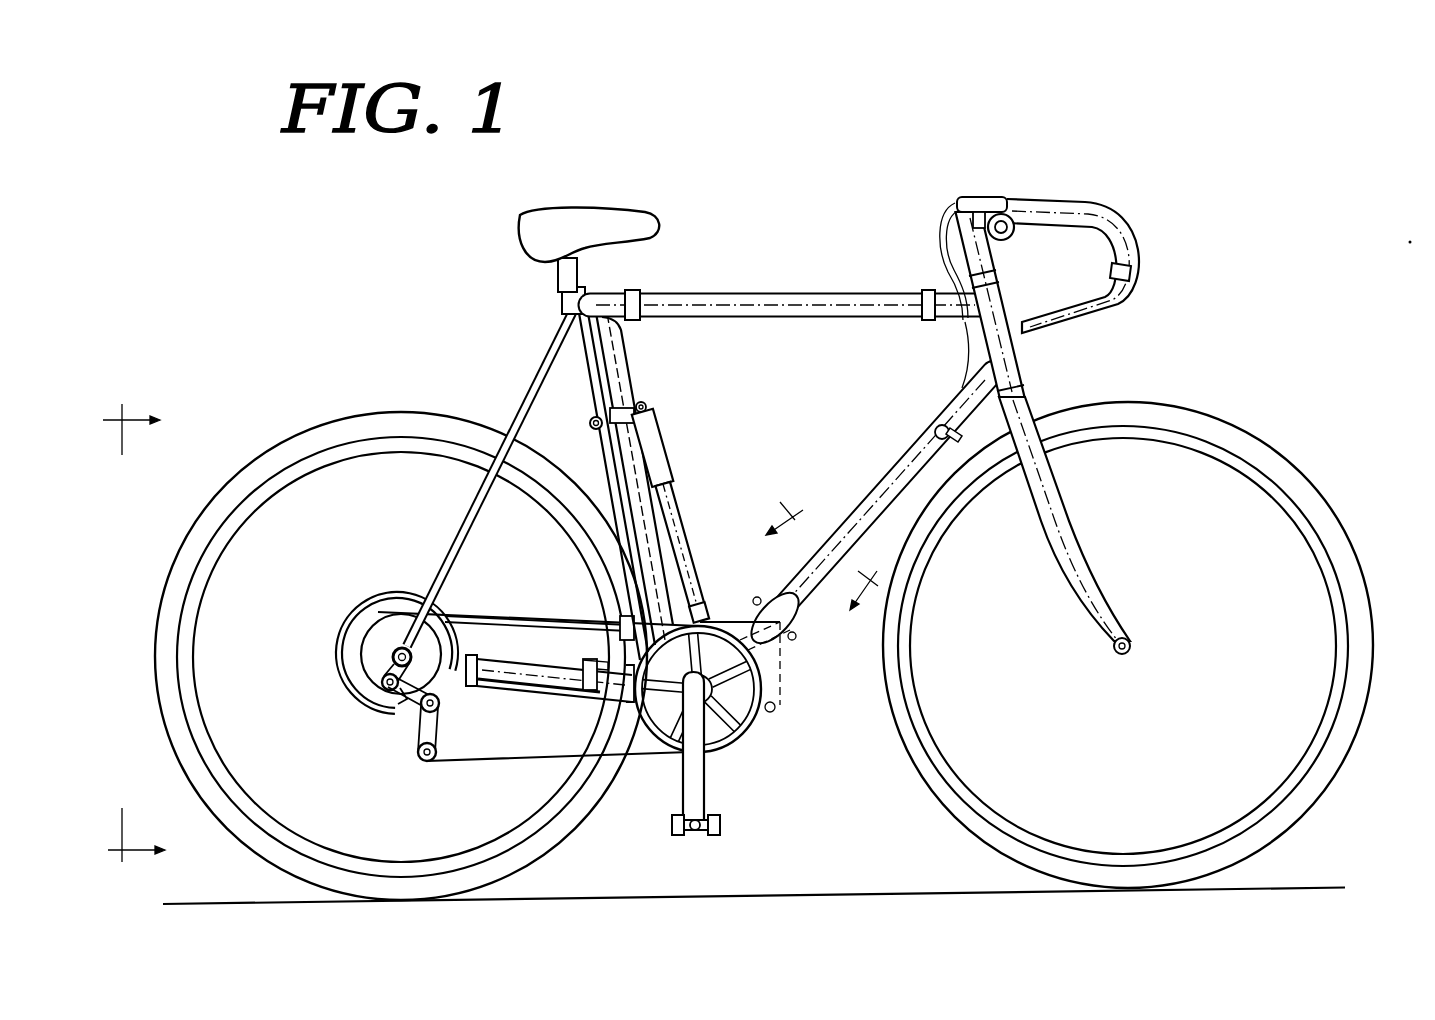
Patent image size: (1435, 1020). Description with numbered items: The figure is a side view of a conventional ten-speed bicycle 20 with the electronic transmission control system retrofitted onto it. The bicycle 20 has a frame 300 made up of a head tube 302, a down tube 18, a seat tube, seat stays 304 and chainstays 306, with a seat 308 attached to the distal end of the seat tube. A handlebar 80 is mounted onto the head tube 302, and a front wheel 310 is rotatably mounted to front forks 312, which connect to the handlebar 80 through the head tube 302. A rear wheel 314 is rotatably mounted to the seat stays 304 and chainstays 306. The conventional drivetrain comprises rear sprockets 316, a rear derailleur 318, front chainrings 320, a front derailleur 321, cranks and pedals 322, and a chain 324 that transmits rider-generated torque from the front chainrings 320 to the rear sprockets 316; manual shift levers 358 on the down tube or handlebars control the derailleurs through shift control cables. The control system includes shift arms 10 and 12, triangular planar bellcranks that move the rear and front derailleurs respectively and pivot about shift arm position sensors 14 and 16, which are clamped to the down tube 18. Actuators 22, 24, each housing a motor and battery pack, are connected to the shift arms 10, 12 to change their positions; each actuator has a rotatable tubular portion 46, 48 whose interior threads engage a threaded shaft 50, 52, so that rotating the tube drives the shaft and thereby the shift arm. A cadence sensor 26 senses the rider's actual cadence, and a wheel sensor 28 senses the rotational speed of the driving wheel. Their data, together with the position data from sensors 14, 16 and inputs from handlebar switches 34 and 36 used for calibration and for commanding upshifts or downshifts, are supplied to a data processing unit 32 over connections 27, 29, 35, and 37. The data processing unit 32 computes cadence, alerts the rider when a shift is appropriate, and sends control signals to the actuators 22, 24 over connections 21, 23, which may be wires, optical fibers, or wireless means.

The bicycle 20 is at (781, 176).
The shift arm 10 is at (727, 730).
The shift arm 12 is at (727, 730).
The shift arm position sensor 14 is at (780, 648).
The shift arm position sensor 16 is at (783, 641).
The down tube 18 is at (884, 494).
The connection 21 is at (649, 486).
The connection 23 is at (616, 352).
The actuator 22 is at (668, 444).
The actuator 24 is at (661, 433).
The cadence sensor 26 is at (610, 667).
The connection 27 is at (568, 316).
The wheel sensor 28 is at (583, 700).
The connection 29 is at (612, 296).
The data processing unit 32 is at (995, 197).
The handlebar switch 34 is at (1164, 283).
The handlebar switch 36 is at (1130, 270).
The connection 35 is at (1110, 266).
The connection 37 is at (1122, 233).
The rotatable tubular portion 46 is at (707, 544).
The rotatable tubular portion 48 is at (678, 503).
The threaded shaft 50 is at (729, 591).
The threaded shaft 52 is at (694, 574).
The handlebar 80 is at (1018, 232).
The frame 300 is at (791, 342).
The head tube 302 is at (1013, 358).
The seat stays 304 is at (541, 378).
The chainstays 306 is at (550, 685).
The seat 308 is at (597, 214).
The front wheel 310 is at (1273, 462).
The front forks 312 is at (1078, 569).
The rear wheel 314 is at (366, 420).
The rear sprockets 316 is at (383, 643).
The rear derailleur 318 is at (437, 690).
The front chainrings 320 is at (727, 747).
The front derailleur 321 is at (614, 636).
The cranks and pedals 322 is at (700, 798).
The chain 324 is at (480, 620).
The shift levers 358 is at (953, 424).